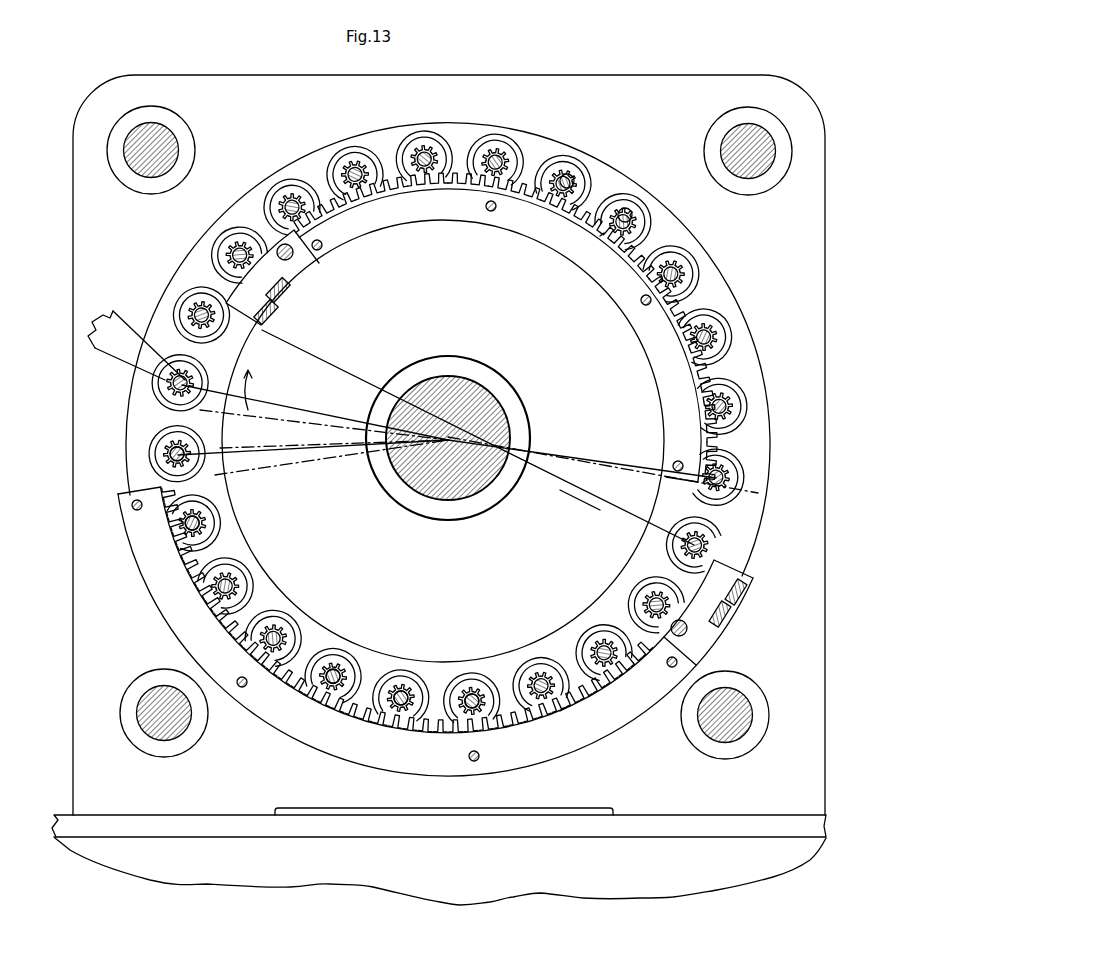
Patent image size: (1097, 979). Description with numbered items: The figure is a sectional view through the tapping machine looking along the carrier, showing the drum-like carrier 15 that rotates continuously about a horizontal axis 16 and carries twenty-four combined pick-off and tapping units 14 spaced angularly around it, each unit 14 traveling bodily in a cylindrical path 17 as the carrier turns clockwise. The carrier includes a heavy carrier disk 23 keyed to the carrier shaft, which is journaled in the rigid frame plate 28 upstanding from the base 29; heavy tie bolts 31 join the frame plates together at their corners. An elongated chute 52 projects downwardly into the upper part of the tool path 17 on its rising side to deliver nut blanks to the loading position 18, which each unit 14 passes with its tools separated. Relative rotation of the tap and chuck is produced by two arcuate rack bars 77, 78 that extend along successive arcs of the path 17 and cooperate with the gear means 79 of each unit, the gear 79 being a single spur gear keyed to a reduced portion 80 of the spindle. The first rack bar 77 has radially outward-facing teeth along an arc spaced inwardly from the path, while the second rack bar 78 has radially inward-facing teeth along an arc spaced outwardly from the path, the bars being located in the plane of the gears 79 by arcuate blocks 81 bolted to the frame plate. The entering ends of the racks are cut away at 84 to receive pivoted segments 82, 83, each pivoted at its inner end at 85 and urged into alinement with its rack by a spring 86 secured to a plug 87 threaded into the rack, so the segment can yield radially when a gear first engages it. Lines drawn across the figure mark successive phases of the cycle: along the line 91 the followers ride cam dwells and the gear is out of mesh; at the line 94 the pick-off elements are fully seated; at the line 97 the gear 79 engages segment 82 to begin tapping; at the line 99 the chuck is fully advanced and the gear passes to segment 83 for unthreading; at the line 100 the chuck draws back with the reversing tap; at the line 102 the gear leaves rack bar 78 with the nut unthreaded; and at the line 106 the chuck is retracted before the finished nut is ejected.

The combined pick-off and tapping unit 14 is at (528, 150).
The drum-like carrier 15 is at (662, 190).
The axis 16 is at (452, 441).
The cylindrical path 17 is at (200, 302).
The loading position 18 is at (134, 402).
The carrier disk 23 is at (648, 183).
The frame plate 28 is at (668, 76).
The base 29 is at (212, 830).
The tie bolt 31 is at (178, 152).
The chute 52 is at (126, 322).
The first arcuate rack bar 77 is at (602, 236).
The second arcuate rack bar 78 is at (566, 708).
The gear means 79 is at (574, 180).
The reduced portion 80 is at (240, 260).
The arcuate block 81 is at (562, 246).
The pivoted segment 82 is at (250, 328).
The pivoted segment 83 is at (732, 566).
The cut-away portion 84 is at (272, 322).
The pivot 85 is at (300, 262).
The spring 86 is at (290, 294).
The plug 87 is at (278, 308).
The line 91 is at (272, 418).
The line 94 is at (322, 412).
The line 97 is at (340, 372).
The line 99 is at (620, 465).
The line 100 is at (596, 478).
The line 102 is at (288, 466).
The line 106 is at (272, 446).